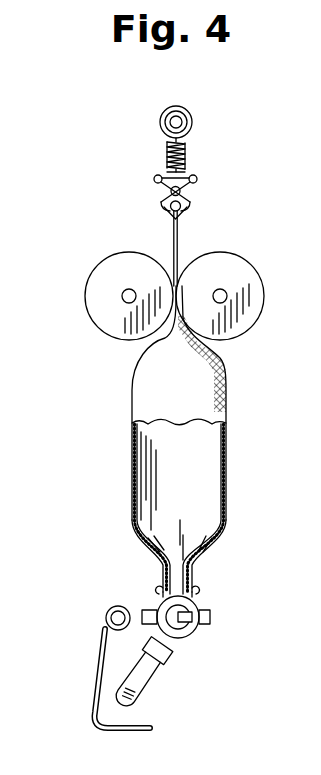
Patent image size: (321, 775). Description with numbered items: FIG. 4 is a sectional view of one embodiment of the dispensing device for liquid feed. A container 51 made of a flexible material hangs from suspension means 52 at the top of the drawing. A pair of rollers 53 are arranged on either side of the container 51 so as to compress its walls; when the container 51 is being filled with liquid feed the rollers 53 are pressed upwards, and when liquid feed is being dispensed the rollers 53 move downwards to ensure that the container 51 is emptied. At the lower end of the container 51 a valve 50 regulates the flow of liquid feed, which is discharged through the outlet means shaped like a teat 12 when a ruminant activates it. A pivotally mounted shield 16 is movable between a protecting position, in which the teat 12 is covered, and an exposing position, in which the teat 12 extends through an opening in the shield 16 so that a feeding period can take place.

The teat 12 is at (146, 690).
The shield 16 is at (93, 680).
The valve 50 is at (200, 604).
The container 51 is at (212, 473).
The suspension means 52 is at (192, 201).
The rollers 53 is at (88, 296).